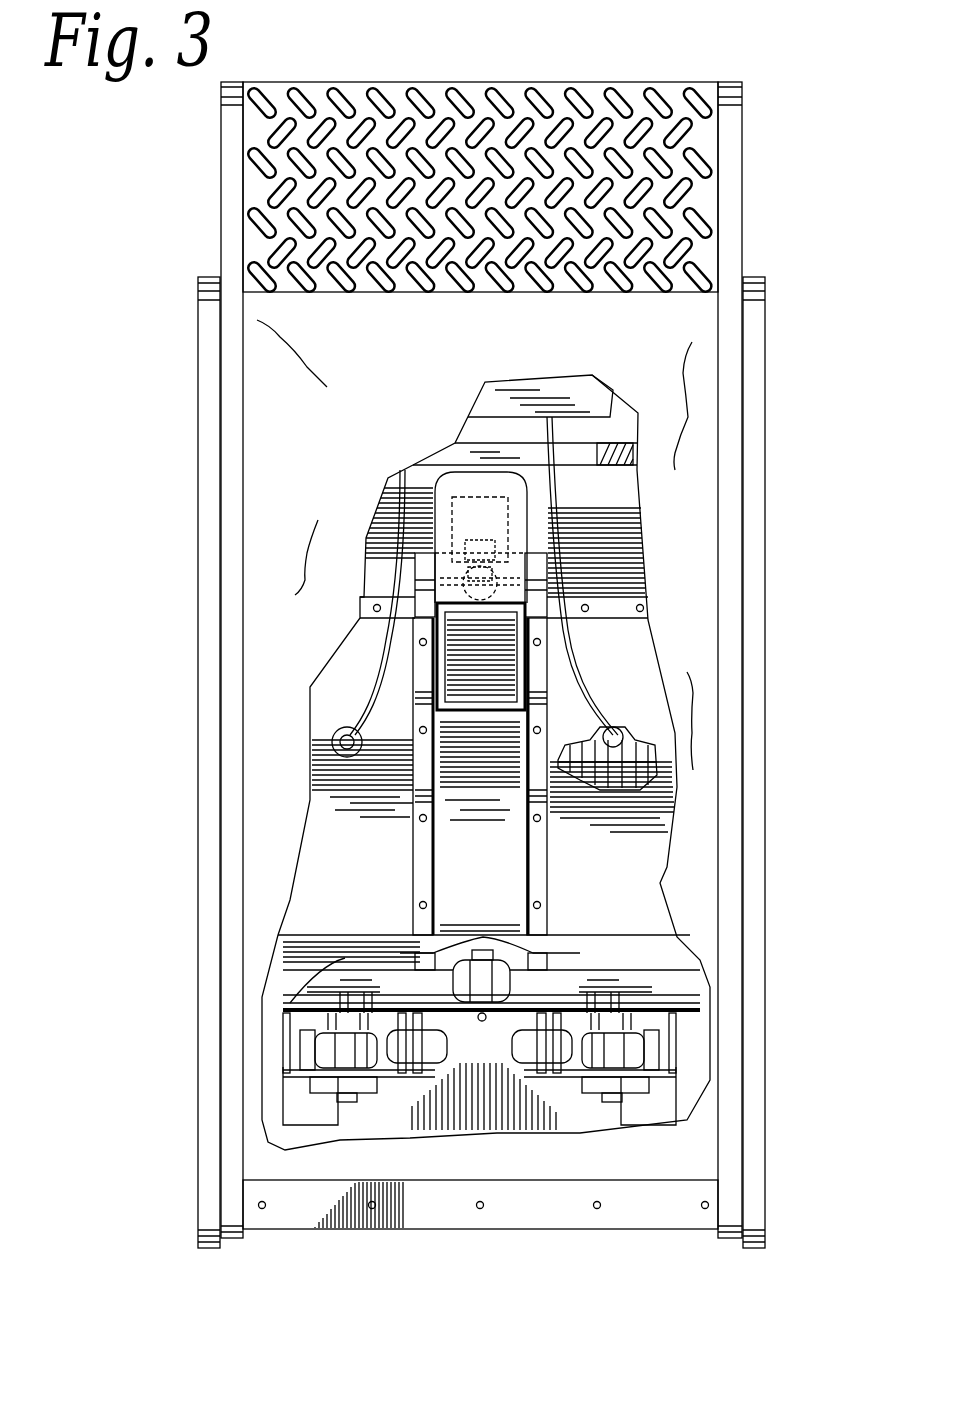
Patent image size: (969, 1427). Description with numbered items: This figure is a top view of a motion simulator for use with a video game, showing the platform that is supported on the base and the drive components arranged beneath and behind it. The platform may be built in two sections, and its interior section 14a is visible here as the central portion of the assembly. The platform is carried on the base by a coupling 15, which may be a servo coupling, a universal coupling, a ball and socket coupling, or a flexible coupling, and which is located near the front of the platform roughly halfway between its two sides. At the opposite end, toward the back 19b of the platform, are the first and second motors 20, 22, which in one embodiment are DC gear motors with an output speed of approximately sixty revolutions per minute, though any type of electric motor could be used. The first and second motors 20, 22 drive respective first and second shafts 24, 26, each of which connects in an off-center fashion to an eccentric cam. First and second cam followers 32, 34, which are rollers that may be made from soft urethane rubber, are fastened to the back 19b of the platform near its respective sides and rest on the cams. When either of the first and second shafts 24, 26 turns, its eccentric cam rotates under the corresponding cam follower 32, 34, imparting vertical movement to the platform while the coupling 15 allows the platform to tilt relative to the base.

The interior section 14a is at (495, 877).
The coupling 15 is at (440, 562).
The back 19b is at (508, 1003).
The first motor 20 is at (368, 894).
The second motor 22 is at (617, 890).
The first shaft 24 is at (347, 1000).
The second shaft 26 is at (617, 1000).
The first cam follower 32 is at (337, 1050).
The second cam follower 34 is at (597, 1050).